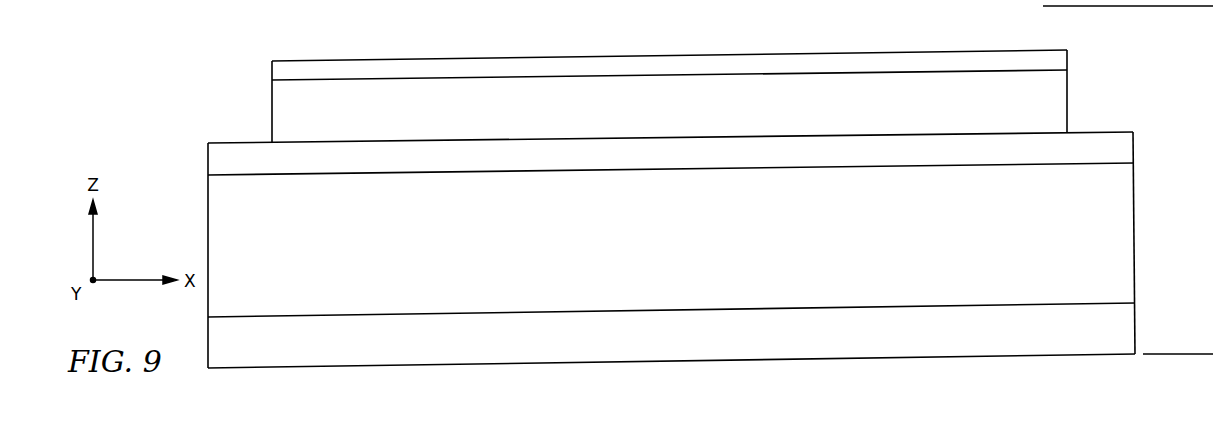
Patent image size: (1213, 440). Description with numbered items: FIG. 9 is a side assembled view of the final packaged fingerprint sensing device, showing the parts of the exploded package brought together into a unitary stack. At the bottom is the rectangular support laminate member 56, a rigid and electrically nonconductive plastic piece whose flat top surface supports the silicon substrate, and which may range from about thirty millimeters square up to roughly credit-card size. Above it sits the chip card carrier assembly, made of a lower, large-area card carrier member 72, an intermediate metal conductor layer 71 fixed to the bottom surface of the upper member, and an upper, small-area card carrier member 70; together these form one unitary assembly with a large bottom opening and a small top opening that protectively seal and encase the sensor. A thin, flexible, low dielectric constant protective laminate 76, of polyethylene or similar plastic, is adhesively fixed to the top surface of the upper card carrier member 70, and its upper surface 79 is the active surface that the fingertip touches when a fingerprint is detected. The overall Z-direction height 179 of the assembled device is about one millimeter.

The upper surface 79 is at (565, 57).
The protective laminate 76 is at (445, 65).
The upper card carrier member 70 is at (1057, 96).
The metal conductor layer 71 is at (1085, 143).
The lower card carrier member 72 is at (1135, 257).
The support laminate member 56 is at (1137, 335).
The Z-direction height 179 is at (1212, 195).